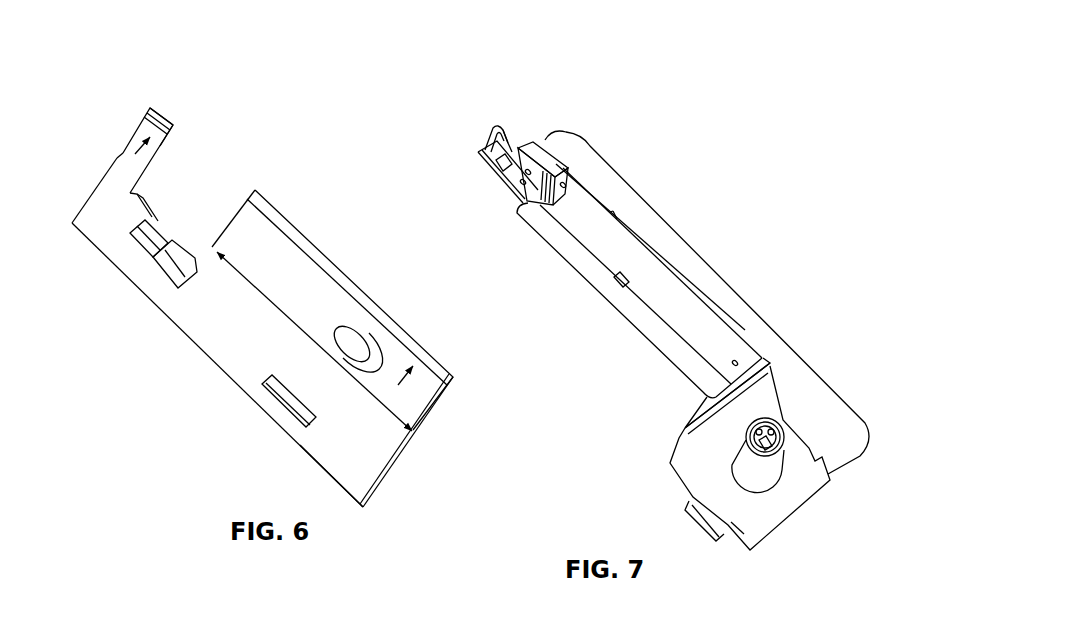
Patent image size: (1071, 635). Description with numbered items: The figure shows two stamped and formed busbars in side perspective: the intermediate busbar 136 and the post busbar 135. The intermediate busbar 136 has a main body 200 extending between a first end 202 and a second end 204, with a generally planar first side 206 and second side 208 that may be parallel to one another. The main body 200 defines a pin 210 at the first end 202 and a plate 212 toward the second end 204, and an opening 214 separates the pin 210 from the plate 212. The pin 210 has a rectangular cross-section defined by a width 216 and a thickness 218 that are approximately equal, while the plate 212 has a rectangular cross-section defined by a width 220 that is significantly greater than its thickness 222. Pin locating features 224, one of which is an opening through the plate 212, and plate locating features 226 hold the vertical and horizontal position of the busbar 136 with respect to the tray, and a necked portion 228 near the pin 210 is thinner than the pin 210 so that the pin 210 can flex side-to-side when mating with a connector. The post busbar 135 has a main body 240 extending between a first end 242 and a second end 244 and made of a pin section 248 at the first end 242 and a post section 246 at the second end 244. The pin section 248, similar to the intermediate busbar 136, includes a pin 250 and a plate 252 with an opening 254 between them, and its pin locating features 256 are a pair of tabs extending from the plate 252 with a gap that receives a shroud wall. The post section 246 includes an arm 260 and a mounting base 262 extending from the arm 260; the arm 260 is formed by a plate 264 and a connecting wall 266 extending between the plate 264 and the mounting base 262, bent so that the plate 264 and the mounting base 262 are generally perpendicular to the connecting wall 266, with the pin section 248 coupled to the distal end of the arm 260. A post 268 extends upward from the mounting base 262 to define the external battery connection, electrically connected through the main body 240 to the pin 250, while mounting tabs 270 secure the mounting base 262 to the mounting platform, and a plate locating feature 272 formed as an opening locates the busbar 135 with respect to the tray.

In FIG. 7, the post busbar 135 is at (643, 330).
In FIG. 6, the intermediate busbar 136 is at (284, 286).
In FIG. 6, the main body 200 is at (225, 337).
In FIG. 6, the first end 202 is at (88, 203).
In FIG. 6, the second end 204 is at (397, 477).
In FIG. 6, the first side 206 is at (345, 466).
In FIG. 6, the second side 208 is at (422, 426).
In FIG. 6, the pin 210 is at (131, 160).
In FIG. 6, the plate 212 is at (308, 297).
In FIG. 6, the opening 214 is at (203, 165).
In FIG. 6, the width 216 is at (124, 170).
In FIG. 6, the thickness 218 is at (169, 105).
In FIG. 6, the width 220 is at (386, 410).
In FIG. 6, the thickness 222 is at (428, 343).
In FIG. 6, the pin locating features 224 is at (131, 245).
In FIG. 6, the plate locating features 226 is at (283, 404).
In FIG. 6, the necked portion 228 is at (144, 202).
In FIG. 7, the main body 240 is at (697, 338).
In FIG. 7, the first end 242 is at (486, 122).
In FIG. 7, the second end 244 is at (810, 521).
In FIG. 7, the post section 246 is at (725, 275).
In FIG. 7, the pin section 248 is at (518, 171).
In FIG. 7, the pin 250 is at (489, 134).
In FIG. 7, the plate 252 is at (527, 163).
In FIG. 7, the opening 254 is at (509, 134).
In FIG. 7, the pin locating features 256 is at (483, 167).
In FIG. 7, the arm 260 is at (774, 383).
In FIG. 7, the mounting base 262 is at (759, 523).
In FIG. 7, the plate 264 is at (698, 403).
In FIG. 7, the connecting wall 266 is at (619, 273).
In FIG. 7, the post 268 is at (768, 478).
In FIG. 7, the mounting tabs 270 is at (698, 521).
In FIG. 7, the plate locating feature 272 is at (616, 278).